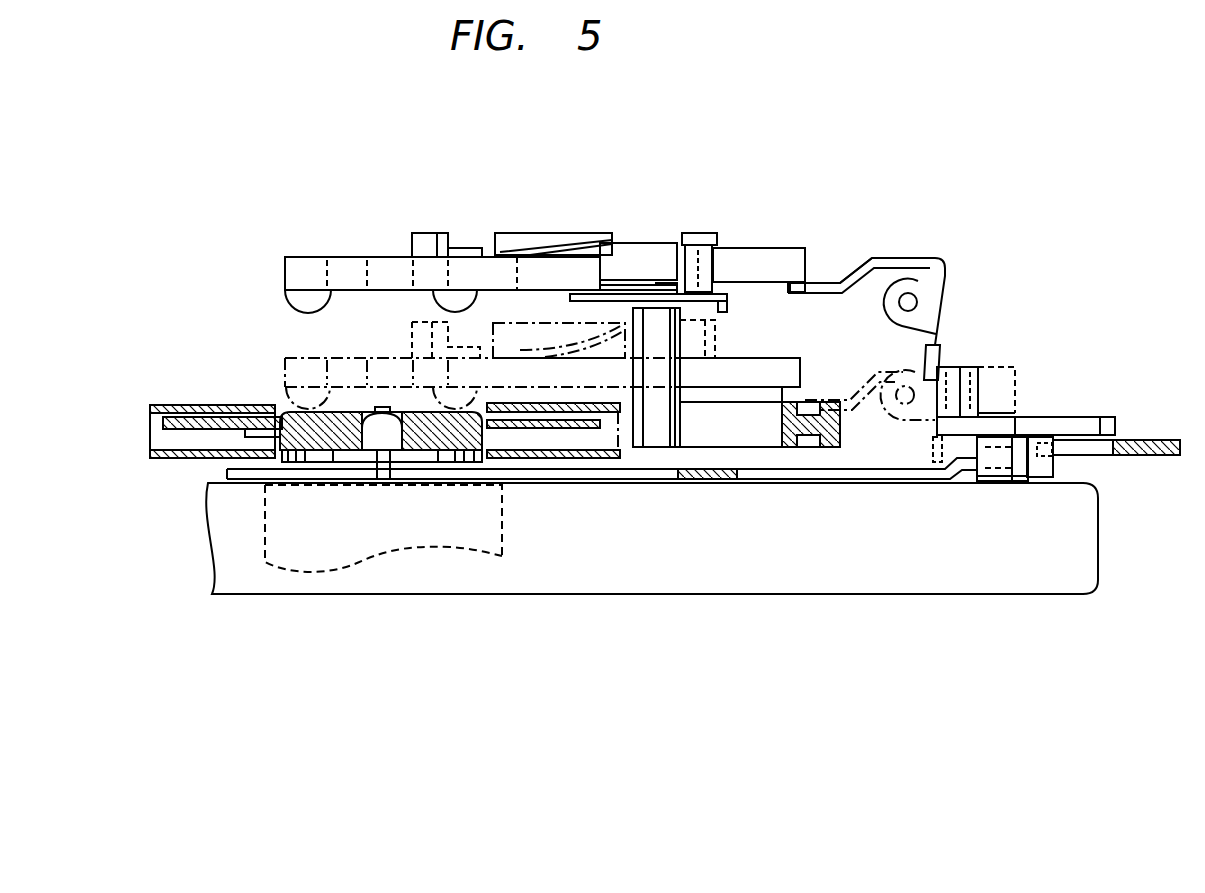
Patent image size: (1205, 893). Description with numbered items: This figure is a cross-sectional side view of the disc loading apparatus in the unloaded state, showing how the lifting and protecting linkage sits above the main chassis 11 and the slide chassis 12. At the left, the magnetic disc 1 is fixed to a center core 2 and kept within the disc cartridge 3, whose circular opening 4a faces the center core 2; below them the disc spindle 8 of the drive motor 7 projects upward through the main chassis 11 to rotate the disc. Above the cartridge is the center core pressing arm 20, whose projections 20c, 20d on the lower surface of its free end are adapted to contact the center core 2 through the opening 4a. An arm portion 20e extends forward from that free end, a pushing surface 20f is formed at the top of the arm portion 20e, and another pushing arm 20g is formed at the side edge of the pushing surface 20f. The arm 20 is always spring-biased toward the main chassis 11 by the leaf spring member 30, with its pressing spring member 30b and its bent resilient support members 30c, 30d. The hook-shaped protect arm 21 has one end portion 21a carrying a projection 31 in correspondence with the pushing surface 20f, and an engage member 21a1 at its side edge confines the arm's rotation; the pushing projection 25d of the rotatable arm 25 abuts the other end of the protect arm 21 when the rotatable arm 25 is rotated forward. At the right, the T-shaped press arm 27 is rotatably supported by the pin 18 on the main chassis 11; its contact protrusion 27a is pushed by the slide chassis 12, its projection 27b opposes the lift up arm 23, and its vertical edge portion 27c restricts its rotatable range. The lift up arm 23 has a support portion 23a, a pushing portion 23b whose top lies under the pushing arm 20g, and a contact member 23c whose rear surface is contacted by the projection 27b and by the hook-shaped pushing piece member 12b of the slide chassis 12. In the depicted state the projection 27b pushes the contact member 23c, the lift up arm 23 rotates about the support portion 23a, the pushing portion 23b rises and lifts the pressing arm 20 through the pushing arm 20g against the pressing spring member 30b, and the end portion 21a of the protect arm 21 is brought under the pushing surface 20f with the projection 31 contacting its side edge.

The magnetic disc 1 is at (175, 427).
The center core 2 is at (451, 440).
The disc cartridge 3 is at (168, 405).
The circular opening 4a is at (490, 403).
The drive motor 7 is at (502, 522).
The disc spindle 8 is at (380, 438).
The main chassis 11 is at (610, 578).
The slide chassis 12 is at (707, 480).
The hook-shaped pushing piece member 12b is at (1108, 448).
The pin 18 is at (998, 452).
The center core pressing arm 20 is at (340, 270).
The projection 20c is at (297, 300).
The projection 20d is at (448, 303).
The arm portion 20e is at (585, 265).
The pushing surface 20f is at (655, 295).
The pushing arm 20g is at (770, 258).
The protect arm 21 is at (628, 294).
The one end portion 21a is at (668, 300).
The engage member 21a1 is at (790, 290).
The lift up arm 23 is at (925, 268).
The support portion 23a is at (930, 300).
The pushing portion 23b is at (820, 283).
The contact member 23c is at (930, 350).
The rotatable arm 25 is at (790, 415).
The pushing projection 25d is at (655, 337).
The T-shaped press arm 27 is at (1048, 416).
The contact protrusion 27a is at (1055, 463).
The projection 27b is at (976, 367).
The vertical edge portion 27c is at (1078, 419).
The leaf spring member 30 is at (562, 245).
The pressing spring member 30b is at (528, 248).
The resilient support member 30c is at (425, 245).
The resilient support member 30d is at (700, 240).
The projection 31 is at (700, 275).